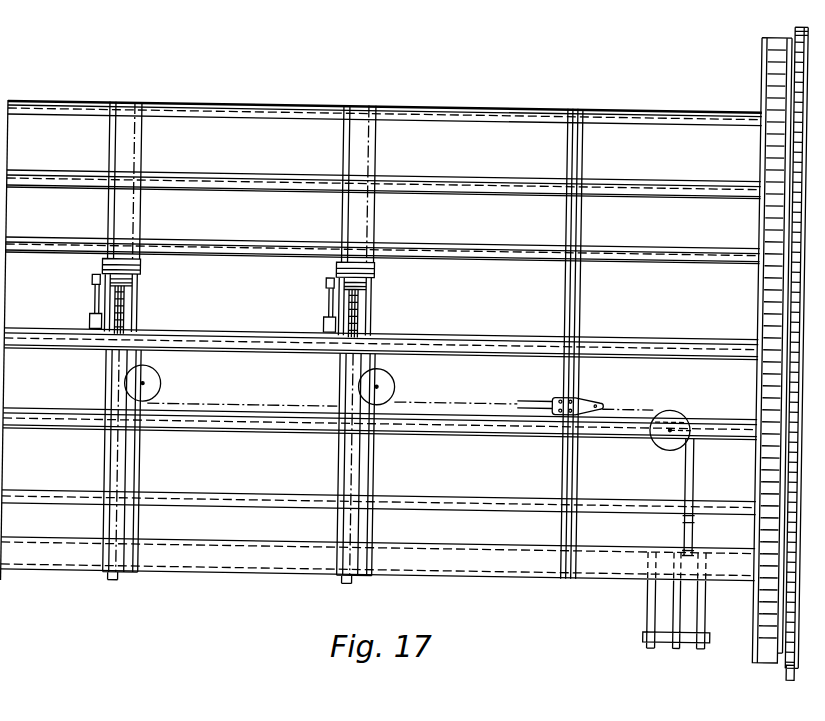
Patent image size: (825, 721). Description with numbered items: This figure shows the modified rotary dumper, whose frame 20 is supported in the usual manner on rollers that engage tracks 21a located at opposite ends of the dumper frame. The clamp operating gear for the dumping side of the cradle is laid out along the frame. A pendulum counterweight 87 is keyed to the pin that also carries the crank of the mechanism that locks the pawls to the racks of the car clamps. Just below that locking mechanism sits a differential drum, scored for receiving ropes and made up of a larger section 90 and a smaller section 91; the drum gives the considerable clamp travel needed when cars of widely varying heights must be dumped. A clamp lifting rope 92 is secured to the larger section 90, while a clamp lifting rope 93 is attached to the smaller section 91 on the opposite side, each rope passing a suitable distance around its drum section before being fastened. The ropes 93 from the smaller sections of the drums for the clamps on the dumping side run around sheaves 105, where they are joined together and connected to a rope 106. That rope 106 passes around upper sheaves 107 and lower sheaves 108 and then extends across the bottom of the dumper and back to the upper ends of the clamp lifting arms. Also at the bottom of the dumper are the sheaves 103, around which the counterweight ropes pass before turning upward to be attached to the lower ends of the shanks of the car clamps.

The frame 20 is at (702, 101).
The tracks 21a is at (799, 663).
The pendulum counterweight 87 is at (93, 318).
The larger section 90 is at (121, 297).
The smaller section 91 is at (139, 301).
The clamp lifting rope 92 is at (498, 397).
The clamp lifting rope 93 is at (256, 405).
The sheaves 103 is at (129, 576).
The sheaves 105 is at (165, 381).
The rope 106 is at (646, 392).
The upper sheaves 107 is at (661, 435).
The lower sheaves 108 is at (700, 517).